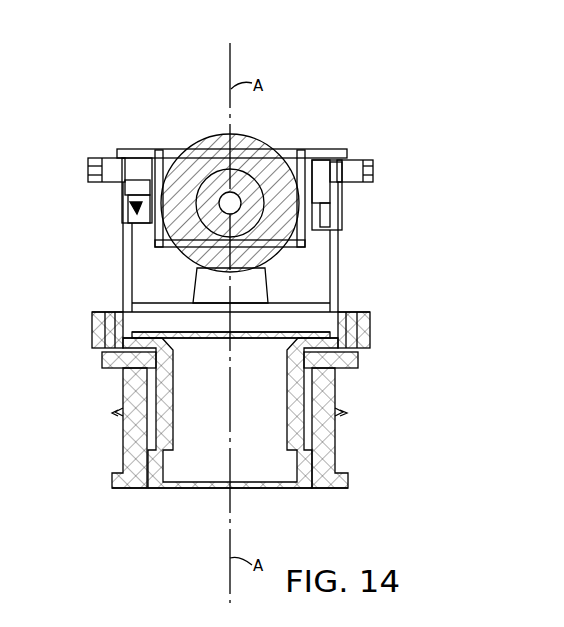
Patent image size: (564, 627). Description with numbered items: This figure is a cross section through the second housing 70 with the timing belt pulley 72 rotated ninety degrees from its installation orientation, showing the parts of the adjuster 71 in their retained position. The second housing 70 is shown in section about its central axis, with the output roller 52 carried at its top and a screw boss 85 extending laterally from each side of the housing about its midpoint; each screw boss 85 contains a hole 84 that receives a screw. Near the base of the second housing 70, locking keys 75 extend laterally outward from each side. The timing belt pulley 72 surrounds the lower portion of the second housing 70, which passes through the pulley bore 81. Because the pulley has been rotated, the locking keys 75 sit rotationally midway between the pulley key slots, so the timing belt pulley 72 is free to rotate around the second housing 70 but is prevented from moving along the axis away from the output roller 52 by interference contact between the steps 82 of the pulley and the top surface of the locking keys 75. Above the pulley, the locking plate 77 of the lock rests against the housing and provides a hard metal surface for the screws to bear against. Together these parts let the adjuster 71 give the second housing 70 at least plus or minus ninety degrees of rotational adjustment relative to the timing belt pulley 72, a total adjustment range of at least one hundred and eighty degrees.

The output roller 52 is at (265, 170).
The second housing 70 is at (337, 240).
The adjuster 71 is at (50, 393).
The timing belt pulley 72 is at (0, 46).
The locking keys 75 is at (157, 485).
The locking plate 77 is at (358, 360).
The pulley bore 81 is at (16, 123).
The steps 82 is at (146, 456).
The holes 84 is at (113, 311).
The screw boss 85 is at (93, 333).